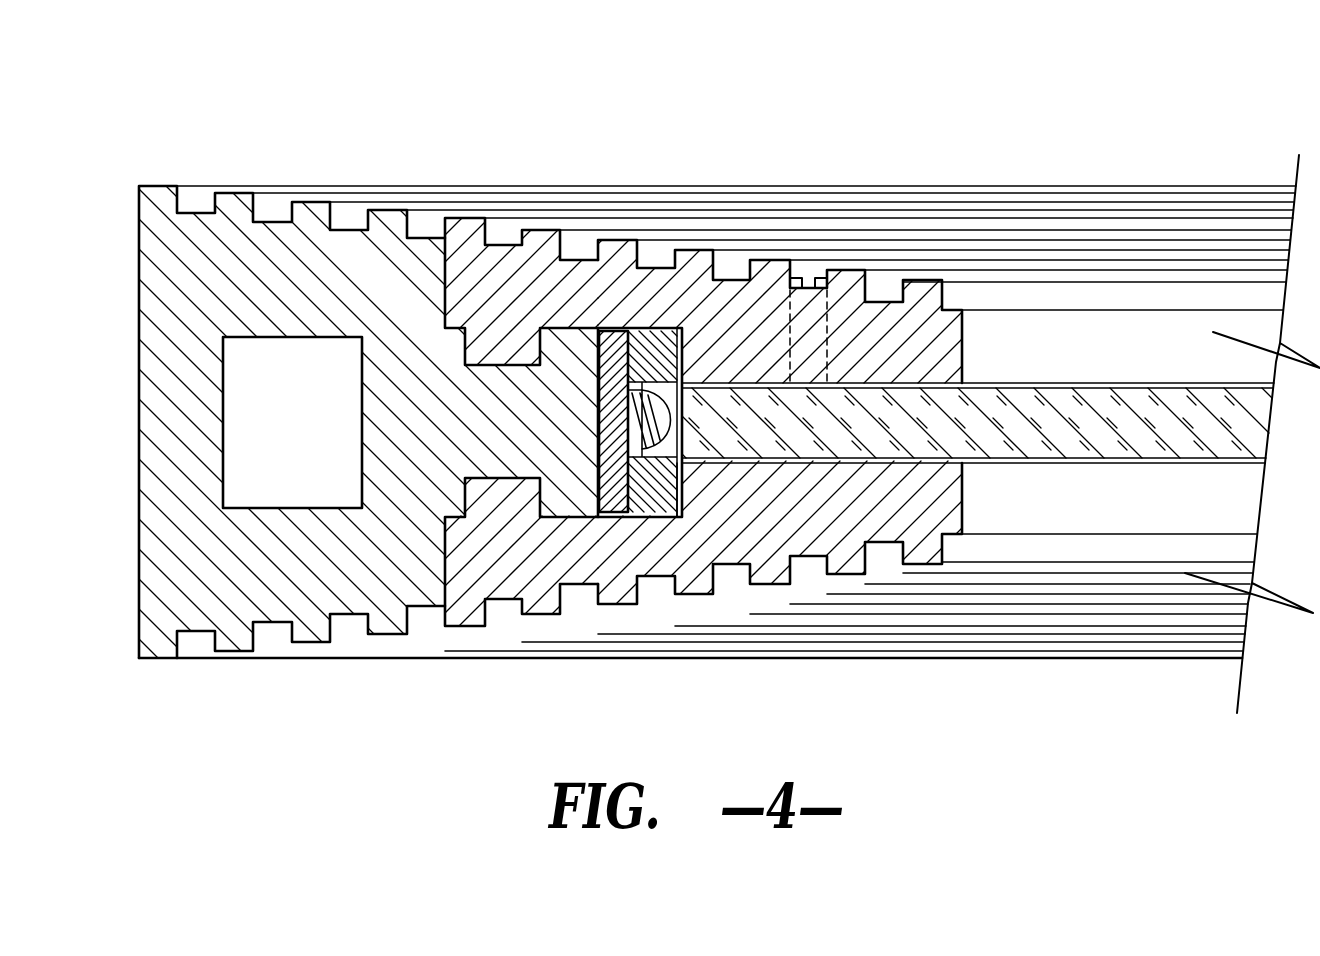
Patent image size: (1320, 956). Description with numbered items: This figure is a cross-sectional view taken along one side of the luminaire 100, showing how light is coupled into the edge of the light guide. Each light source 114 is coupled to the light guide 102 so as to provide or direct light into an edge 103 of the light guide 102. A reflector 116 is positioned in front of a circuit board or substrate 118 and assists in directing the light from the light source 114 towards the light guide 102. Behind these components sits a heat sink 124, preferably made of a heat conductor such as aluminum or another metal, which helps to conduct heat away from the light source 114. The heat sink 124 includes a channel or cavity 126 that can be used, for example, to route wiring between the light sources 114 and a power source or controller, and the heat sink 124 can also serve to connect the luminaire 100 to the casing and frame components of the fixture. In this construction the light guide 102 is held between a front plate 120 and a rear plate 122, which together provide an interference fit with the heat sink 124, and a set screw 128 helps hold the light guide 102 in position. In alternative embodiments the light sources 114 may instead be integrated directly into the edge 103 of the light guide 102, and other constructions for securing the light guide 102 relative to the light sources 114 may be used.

The luminaire 100 is at (1062, 130).
The light guide 102 is at (1025, 403).
The edge of light guide 103 is at (685, 466).
The light source 114 is at (658, 400).
The reflector 116 is at (657, 360).
The circuit board 118 is at (607, 367).
The front plate 120 is at (616, 283).
The rear plate 122 is at (540, 575).
The heat sink 124 is at (235, 233).
The cavity 126 is at (264, 406).
The set screw 128 is at (818, 282).